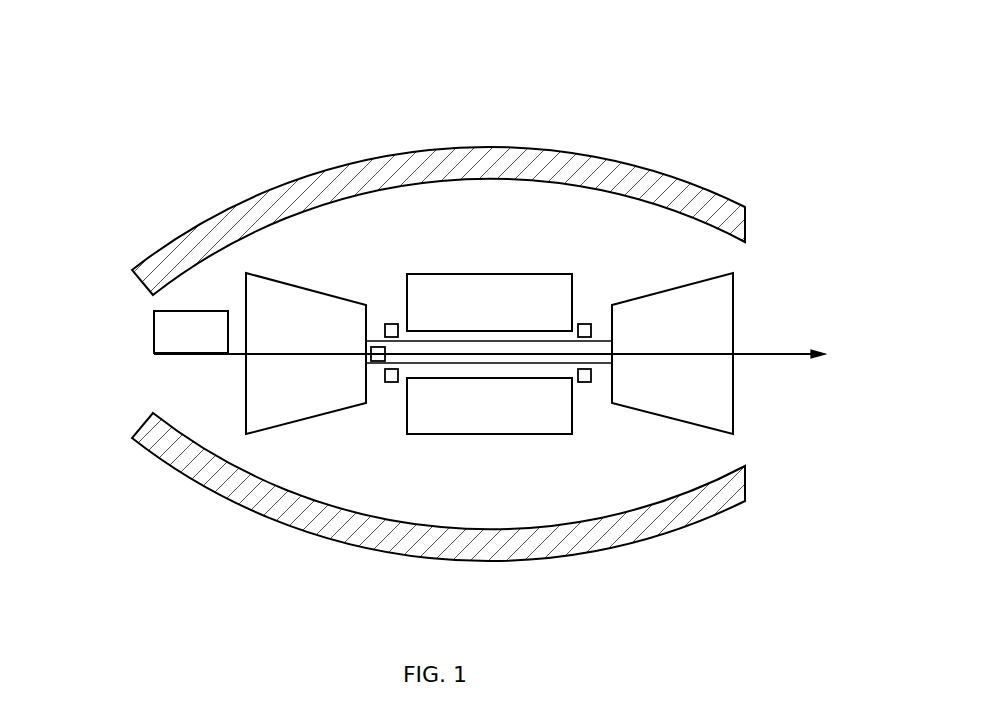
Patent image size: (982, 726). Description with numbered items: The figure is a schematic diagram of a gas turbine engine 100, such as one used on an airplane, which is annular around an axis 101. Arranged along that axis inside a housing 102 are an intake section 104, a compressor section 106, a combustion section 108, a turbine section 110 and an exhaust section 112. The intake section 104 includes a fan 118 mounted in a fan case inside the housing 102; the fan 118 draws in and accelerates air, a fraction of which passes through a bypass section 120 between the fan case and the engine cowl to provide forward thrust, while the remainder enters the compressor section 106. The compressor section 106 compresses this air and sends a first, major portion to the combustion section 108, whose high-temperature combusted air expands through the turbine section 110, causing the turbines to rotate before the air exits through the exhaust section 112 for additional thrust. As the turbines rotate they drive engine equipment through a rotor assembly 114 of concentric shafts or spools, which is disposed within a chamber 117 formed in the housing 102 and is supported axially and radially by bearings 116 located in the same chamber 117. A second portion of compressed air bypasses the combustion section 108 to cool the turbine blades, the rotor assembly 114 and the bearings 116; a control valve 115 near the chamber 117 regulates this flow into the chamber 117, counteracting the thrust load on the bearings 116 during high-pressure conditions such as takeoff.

The gas turbine engine 100 is at (624, 87).
The axis 101 is at (778, 350).
The housing 102 is at (668, 184).
The intake section 104 is at (138, 370).
The compressor section 106 is at (310, 410).
The combustion section 108 is at (488, 428).
The turbine section 110 is at (674, 408).
The exhaust section 112 is at (771, 370).
The rotor assembly 114 is at (490, 348).
The control valve 115 is at (372, 357).
The bearings 116 is at (390, 322).
The chamber 117 is at (453, 334).
The fan 118 is at (153, 334).
The bypass section 120 is at (310, 264).